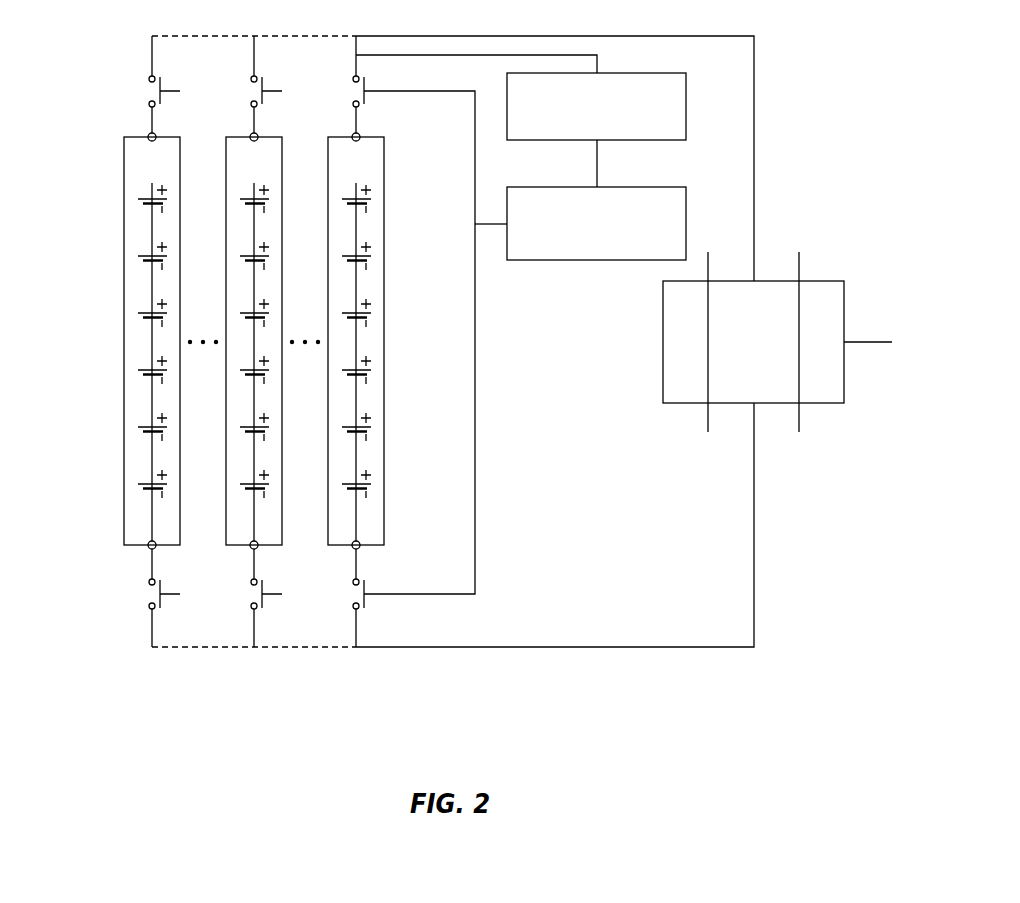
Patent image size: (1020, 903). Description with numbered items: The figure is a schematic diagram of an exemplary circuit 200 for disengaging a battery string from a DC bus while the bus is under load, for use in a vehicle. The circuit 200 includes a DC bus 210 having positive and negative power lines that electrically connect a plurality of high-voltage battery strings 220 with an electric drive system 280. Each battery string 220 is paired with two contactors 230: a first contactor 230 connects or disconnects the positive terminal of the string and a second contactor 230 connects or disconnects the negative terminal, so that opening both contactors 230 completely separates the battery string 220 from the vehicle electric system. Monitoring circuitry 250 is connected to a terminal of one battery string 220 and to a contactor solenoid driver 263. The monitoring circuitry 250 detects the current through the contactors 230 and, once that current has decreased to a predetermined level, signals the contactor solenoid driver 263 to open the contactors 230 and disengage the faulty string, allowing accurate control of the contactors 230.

The circuit 200 is at (575, 539).
The DC bus 210 is at (453, 343).
The high-voltage battery string 220 is at (120, 393).
The contactor 230 is at (313, 607).
The monitoring circuitry 250 is at (596, 106).
The contactor solenoid driver 263 is at (596, 200).
The electric drive system 280 is at (777, 342).